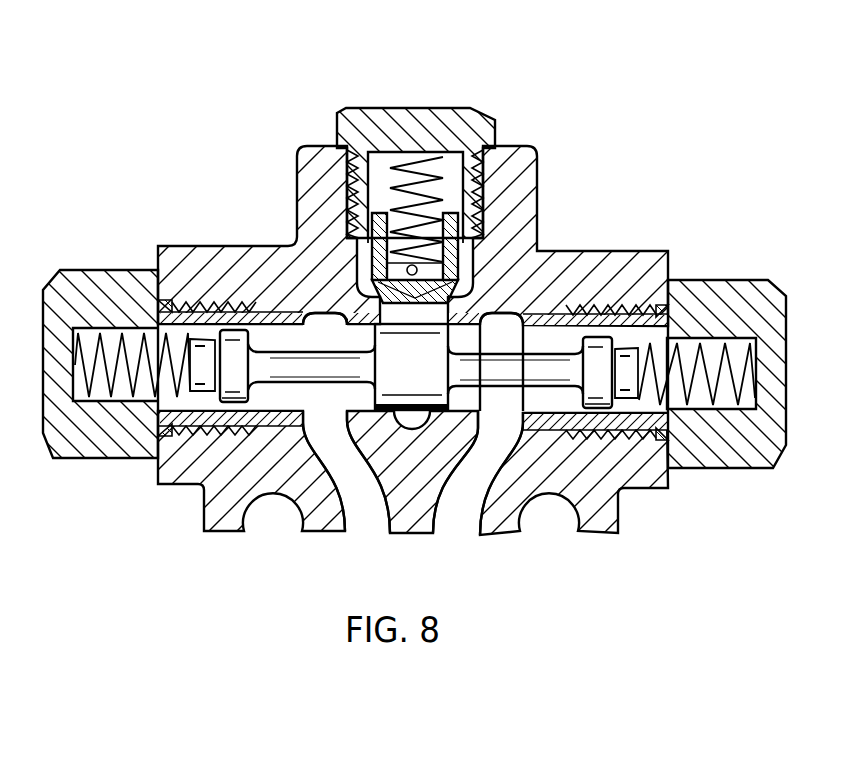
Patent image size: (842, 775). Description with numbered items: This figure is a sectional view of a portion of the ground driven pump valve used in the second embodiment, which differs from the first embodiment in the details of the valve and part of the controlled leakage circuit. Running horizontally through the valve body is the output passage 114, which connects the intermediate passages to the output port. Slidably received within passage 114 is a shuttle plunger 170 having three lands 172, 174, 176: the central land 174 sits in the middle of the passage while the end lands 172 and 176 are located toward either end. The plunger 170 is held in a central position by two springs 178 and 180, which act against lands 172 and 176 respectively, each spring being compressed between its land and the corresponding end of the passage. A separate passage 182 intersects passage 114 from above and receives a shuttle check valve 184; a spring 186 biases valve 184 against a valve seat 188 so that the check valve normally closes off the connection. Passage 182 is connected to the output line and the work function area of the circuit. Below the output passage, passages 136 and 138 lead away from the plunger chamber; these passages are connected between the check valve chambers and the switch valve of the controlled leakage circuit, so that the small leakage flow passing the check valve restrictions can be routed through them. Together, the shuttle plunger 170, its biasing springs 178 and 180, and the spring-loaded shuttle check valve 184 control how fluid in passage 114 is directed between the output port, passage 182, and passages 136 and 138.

The output passage 114 is at (275, 322).
The passage 136 is at (492, 462).
The passage 138 is at (336, 462).
The shuttle plunger 170 is at (543, 356).
The land 172 is at (603, 338).
The land 174 is at (432, 376).
The land 176 is at (233, 330).
The spring 178 is at (727, 350).
The spring 180 is at (131, 330).
The passage 182 is at (380, 160).
The shuttle check valve 184 is at (384, 210).
The spring 186 is at (418, 157).
The valve seat 188 is at (501, 362).